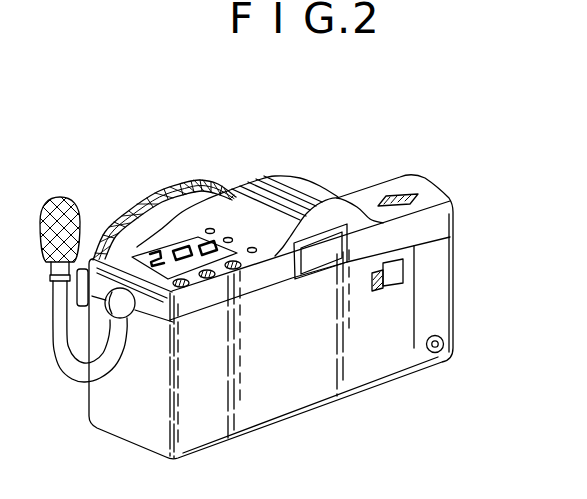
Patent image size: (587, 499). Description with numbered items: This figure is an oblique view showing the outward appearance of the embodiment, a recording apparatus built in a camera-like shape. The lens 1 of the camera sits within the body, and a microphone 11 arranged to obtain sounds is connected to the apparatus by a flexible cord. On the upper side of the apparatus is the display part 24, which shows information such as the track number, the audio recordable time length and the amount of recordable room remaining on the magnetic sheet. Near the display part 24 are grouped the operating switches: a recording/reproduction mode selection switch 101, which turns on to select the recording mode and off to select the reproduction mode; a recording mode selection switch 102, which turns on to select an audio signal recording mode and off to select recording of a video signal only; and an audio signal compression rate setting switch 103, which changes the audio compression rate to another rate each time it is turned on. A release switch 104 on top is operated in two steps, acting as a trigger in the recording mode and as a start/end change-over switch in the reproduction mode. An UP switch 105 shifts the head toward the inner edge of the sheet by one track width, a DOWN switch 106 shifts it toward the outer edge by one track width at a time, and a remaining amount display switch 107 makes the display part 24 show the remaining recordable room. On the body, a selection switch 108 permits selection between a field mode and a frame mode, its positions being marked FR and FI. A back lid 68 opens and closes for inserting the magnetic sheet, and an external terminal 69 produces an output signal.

The lens 1 is at (168, 190).
The microphone 11 is at (62, 195).
The display part 24 is at (144, 297).
The back lid 68 is at (366, 368).
The external terminal 69 is at (434, 353).
The recording/reproduction mode selection switch 101 is at (208, 229).
The recording mode selection switch 102 is at (228, 238).
The audio signal compression rate setting switch 103 is at (253, 247).
The release switch 104 is at (393, 197).
The UP switch 105 is at (208, 278).
The DOWN switch 106 is at (237, 270).
The remaining amount display switch 107 is at (180, 287).
The selection switch 108 is at (403, 267).
The switch position label FR is at (377, 291).
The switch position label FI is at (397, 286).